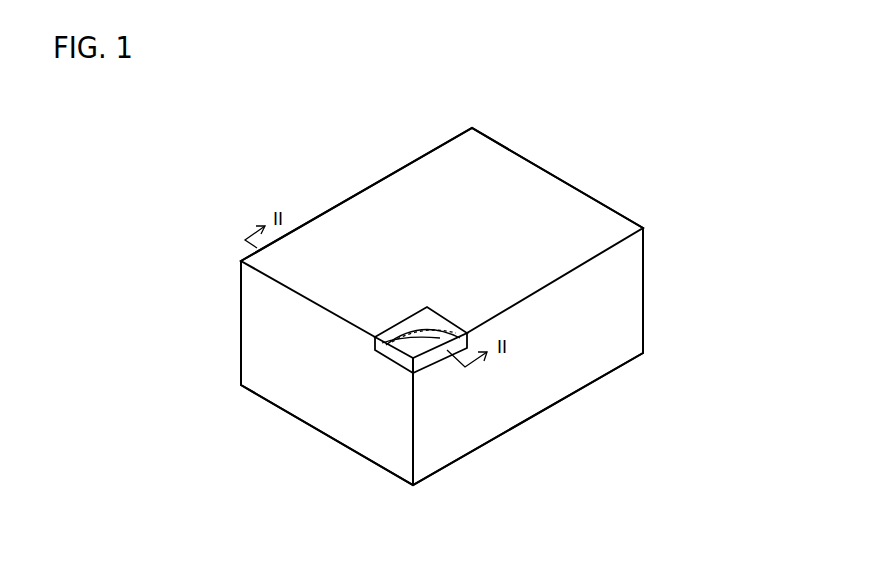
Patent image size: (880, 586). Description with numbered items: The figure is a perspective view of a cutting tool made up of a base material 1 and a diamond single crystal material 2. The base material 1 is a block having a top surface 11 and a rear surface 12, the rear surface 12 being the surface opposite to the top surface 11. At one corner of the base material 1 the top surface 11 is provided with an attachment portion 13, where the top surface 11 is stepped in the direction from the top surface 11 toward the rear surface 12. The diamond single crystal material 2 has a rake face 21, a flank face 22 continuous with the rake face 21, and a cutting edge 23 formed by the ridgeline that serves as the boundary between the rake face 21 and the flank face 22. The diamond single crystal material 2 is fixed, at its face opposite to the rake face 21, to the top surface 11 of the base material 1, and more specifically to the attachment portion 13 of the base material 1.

The base material 1 is at (578, 158).
The top surface 11 is at (598, 220).
The rear surface 12 is at (597, 378).
The attachment portion 13 is at (428, 372).
The diamond single crystal material 2 is at (288, 310).
The rake face 21 is at (388, 343).
The flank face 22 is at (413, 318).
The cutting edge 23 is at (405, 328).